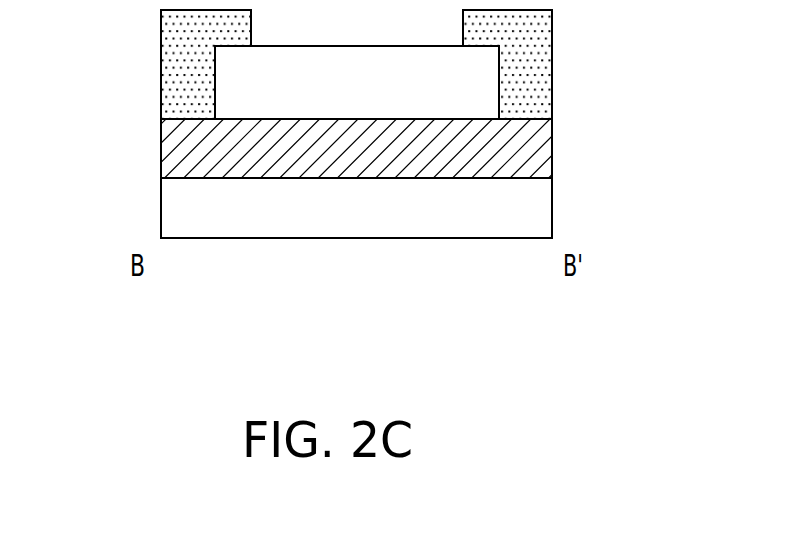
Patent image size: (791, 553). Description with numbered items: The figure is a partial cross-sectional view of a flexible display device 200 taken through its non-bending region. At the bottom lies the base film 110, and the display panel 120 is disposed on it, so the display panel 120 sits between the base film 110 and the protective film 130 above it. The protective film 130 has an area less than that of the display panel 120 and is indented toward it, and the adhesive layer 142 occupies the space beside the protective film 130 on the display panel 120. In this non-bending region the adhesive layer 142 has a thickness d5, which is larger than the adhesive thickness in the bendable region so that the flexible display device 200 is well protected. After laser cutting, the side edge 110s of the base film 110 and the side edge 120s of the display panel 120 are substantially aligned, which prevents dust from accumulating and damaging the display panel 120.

The base film 110 is at (545, 222).
The display panel 120 is at (545, 153).
The protective film 130 is at (487, 83).
The adhesive layer 142 is at (537, 100).
The side edge of the display panel 120s is at (149, 156).
The side edge of the base film 110s is at (149, 214).
The thickness of the adhesive layer d5 is at (113, 10).
The flexible display device 200 is at (660, 345).